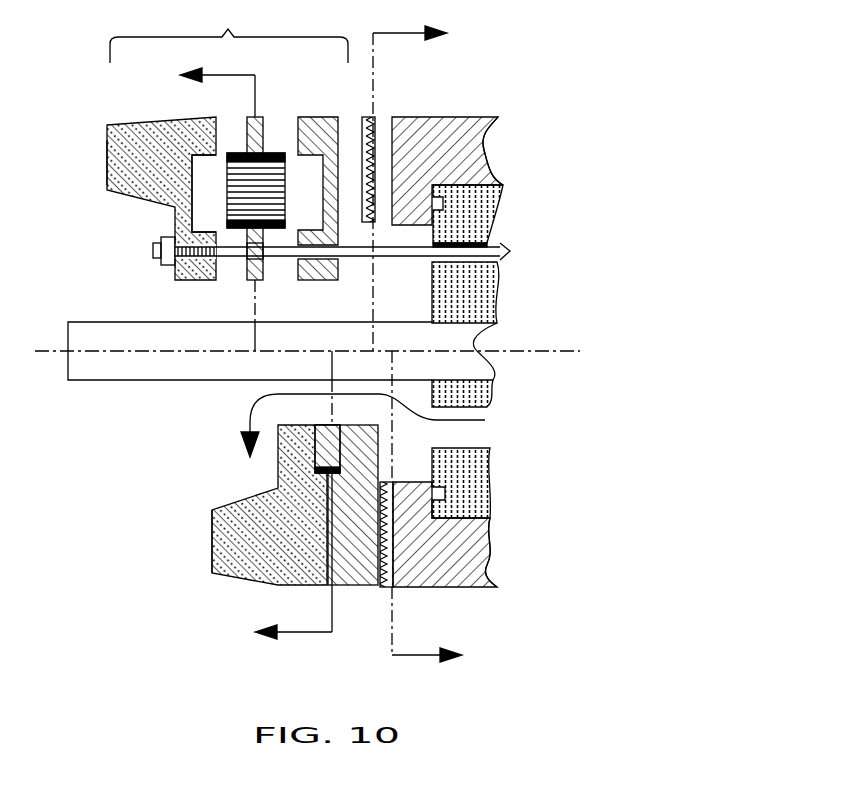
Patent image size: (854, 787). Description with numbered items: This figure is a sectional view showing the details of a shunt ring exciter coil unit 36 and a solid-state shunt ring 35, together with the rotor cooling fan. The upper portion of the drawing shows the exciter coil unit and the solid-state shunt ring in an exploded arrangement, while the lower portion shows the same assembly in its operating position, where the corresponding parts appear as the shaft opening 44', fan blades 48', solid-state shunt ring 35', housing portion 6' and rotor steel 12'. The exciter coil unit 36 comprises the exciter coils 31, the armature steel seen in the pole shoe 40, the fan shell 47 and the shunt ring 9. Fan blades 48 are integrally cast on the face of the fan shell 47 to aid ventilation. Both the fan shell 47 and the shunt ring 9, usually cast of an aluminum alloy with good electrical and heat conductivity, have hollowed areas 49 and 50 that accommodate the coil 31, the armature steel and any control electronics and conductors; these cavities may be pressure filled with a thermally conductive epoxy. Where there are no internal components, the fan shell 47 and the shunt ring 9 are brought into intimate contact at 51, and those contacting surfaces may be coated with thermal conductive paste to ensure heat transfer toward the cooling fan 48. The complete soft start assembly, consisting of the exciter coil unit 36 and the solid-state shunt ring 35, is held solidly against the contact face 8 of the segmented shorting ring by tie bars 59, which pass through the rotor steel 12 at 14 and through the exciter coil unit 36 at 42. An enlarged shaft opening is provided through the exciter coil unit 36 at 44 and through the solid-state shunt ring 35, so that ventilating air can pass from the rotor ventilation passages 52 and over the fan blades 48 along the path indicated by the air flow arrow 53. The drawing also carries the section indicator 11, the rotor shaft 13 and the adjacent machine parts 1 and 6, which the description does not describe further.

The shunt ring exciter coil unit 36 is at (248, 498).
The shunt ring 9 is at (320, 117).
The section line 11- 11 is at (438, 346).
The fan shell 47 is at (187, 118).
The fan blades 48 is at (84, 162).
The hollowed area of fan shell 49 is at (204, 193).
The tie bar passage through exciter coil unit 42 is at (326, 275).
The enlarged shaft opening 44 is at (237, 274).
The pole shoe 40 is at (258, 117).
The exciter coils 31 is at (282, 196).
The hollowed area of shunt ring 50 is at (315, 198).
The solid-state shunt ring 35 is at (352, 155).
The contact face 8 is at (390, 124).
The housing 6 is at (447, 150).
The machine frame 1 is at (465, 115).
The tie bar passage through rotor steel 14 is at (490, 242).
The tie bars 59 is at (502, 254).
The rotor steel 12 is at (484, 334).
The shaft 13 is at (68, 322).
The air flow arrow 53 is at (250, 422).
The rotor ventilation passages 52 is at (480, 432).
The contact area 51 is at (330, 587).
The nut 44' is at (346, 435).
The flange 48' is at (184, 541).
The seal ring 35' is at (373, 551).
The housing 6' is at (445, 553).
The rotor 12' is at (491, 483).